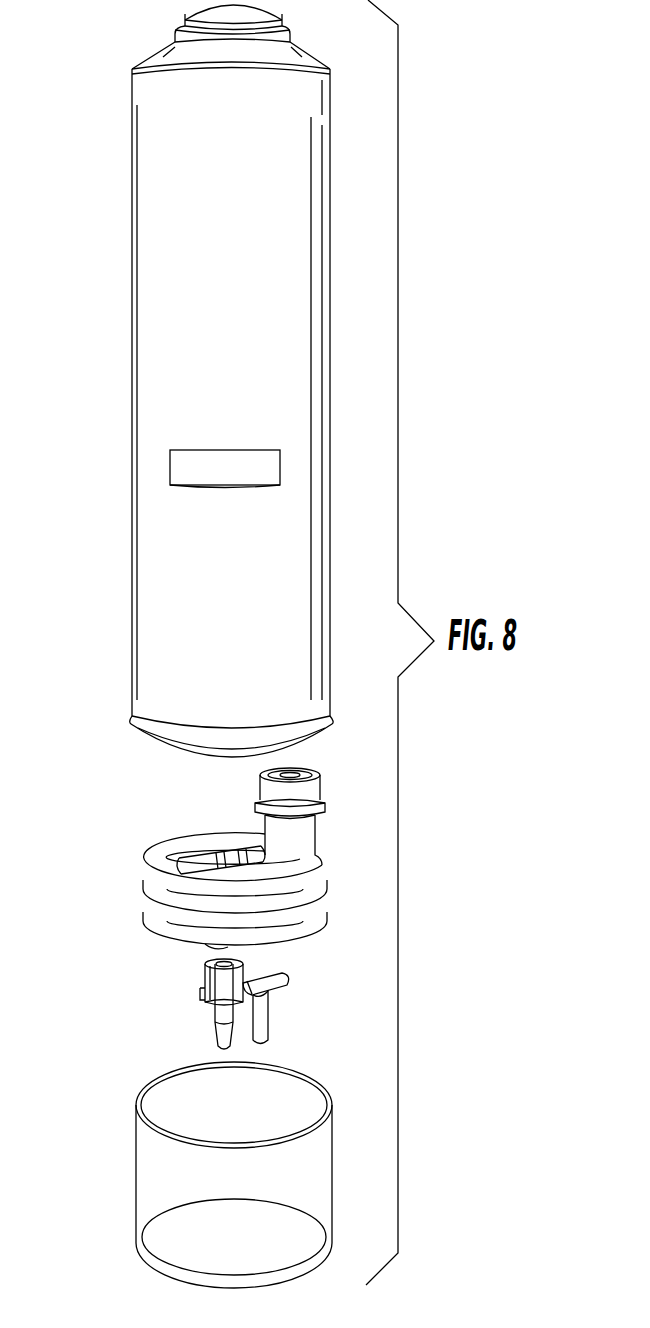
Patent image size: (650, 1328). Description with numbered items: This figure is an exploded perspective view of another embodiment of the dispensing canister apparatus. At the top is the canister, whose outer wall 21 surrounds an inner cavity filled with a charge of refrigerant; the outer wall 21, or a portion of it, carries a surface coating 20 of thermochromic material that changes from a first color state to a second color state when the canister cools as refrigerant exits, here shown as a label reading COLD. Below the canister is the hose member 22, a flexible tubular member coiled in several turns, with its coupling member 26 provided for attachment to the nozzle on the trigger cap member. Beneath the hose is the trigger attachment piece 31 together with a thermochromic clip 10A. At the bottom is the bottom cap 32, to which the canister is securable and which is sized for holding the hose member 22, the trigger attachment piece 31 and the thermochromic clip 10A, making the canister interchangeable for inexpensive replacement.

The surface coating 20 is at (170, 462).
The outer wall 21 is at (133, 556).
The hose member 22 is at (143, 887).
The coupling member 26 is at (214, 950).
The trigger attachment piece 31 is at (200, 994).
The thermochromic clip 10A is at (292, 984).
The bottom cap 32 is at (143, 1175).